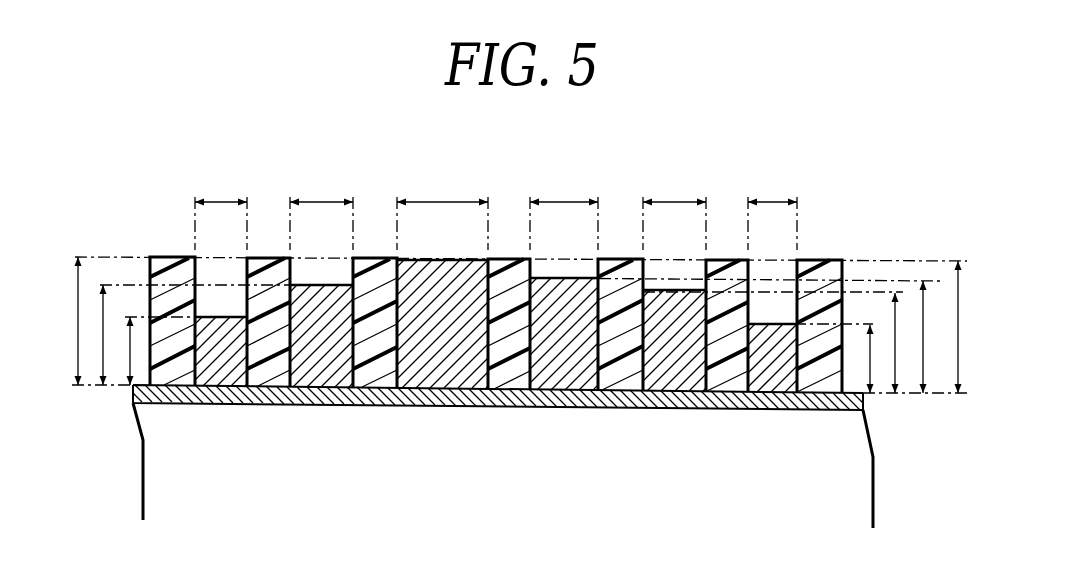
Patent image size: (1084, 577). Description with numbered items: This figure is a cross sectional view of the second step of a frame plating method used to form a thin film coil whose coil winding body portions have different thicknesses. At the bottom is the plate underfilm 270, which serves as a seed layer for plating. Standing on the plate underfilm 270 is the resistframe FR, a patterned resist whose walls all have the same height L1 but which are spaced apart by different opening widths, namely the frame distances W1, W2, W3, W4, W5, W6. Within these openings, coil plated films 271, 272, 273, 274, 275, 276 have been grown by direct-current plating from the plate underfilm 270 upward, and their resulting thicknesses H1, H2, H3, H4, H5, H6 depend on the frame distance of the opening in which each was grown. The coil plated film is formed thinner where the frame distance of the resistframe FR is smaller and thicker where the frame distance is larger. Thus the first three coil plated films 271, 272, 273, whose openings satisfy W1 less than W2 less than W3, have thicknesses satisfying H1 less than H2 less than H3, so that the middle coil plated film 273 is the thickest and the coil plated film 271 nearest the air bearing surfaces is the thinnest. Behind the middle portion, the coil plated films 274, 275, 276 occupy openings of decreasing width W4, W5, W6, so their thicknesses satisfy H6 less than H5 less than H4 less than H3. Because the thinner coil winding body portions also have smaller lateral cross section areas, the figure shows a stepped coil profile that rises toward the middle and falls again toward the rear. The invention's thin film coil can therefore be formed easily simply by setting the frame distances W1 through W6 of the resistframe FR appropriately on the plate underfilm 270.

The plate underfilm 270 is at (380, 393).
The coil plated film 271 is at (215, 377).
The coil plated film 272 is at (318, 377).
The coil plated film 273 is at (442, 376).
The coil plated film 274 is at (563, 376).
The coil plated film 275 is at (670, 378).
The coil plated film 276 is at (772, 380).
The frame distance W1 is at (222, 202).
The frame distance W2 is at (322, 202).
The frame distance W3 is at (442, 202).
The frame distance W4 is at (572, 202).
The frame distance W5 is at (677, 202).
The frame distance W6 is at (775, 202).
The thickness H1 is at (130, 357).
The thickness H2 is at (108, 318).
The thickness H3 is at (80, 312).
The thickness H4 is at (872, 365).
The thickness H5 is at (897, 342).
The thickness H6 is at (928, 365).
The height L1 is at (958, 305).
The resistframe FR is at (825, 263).